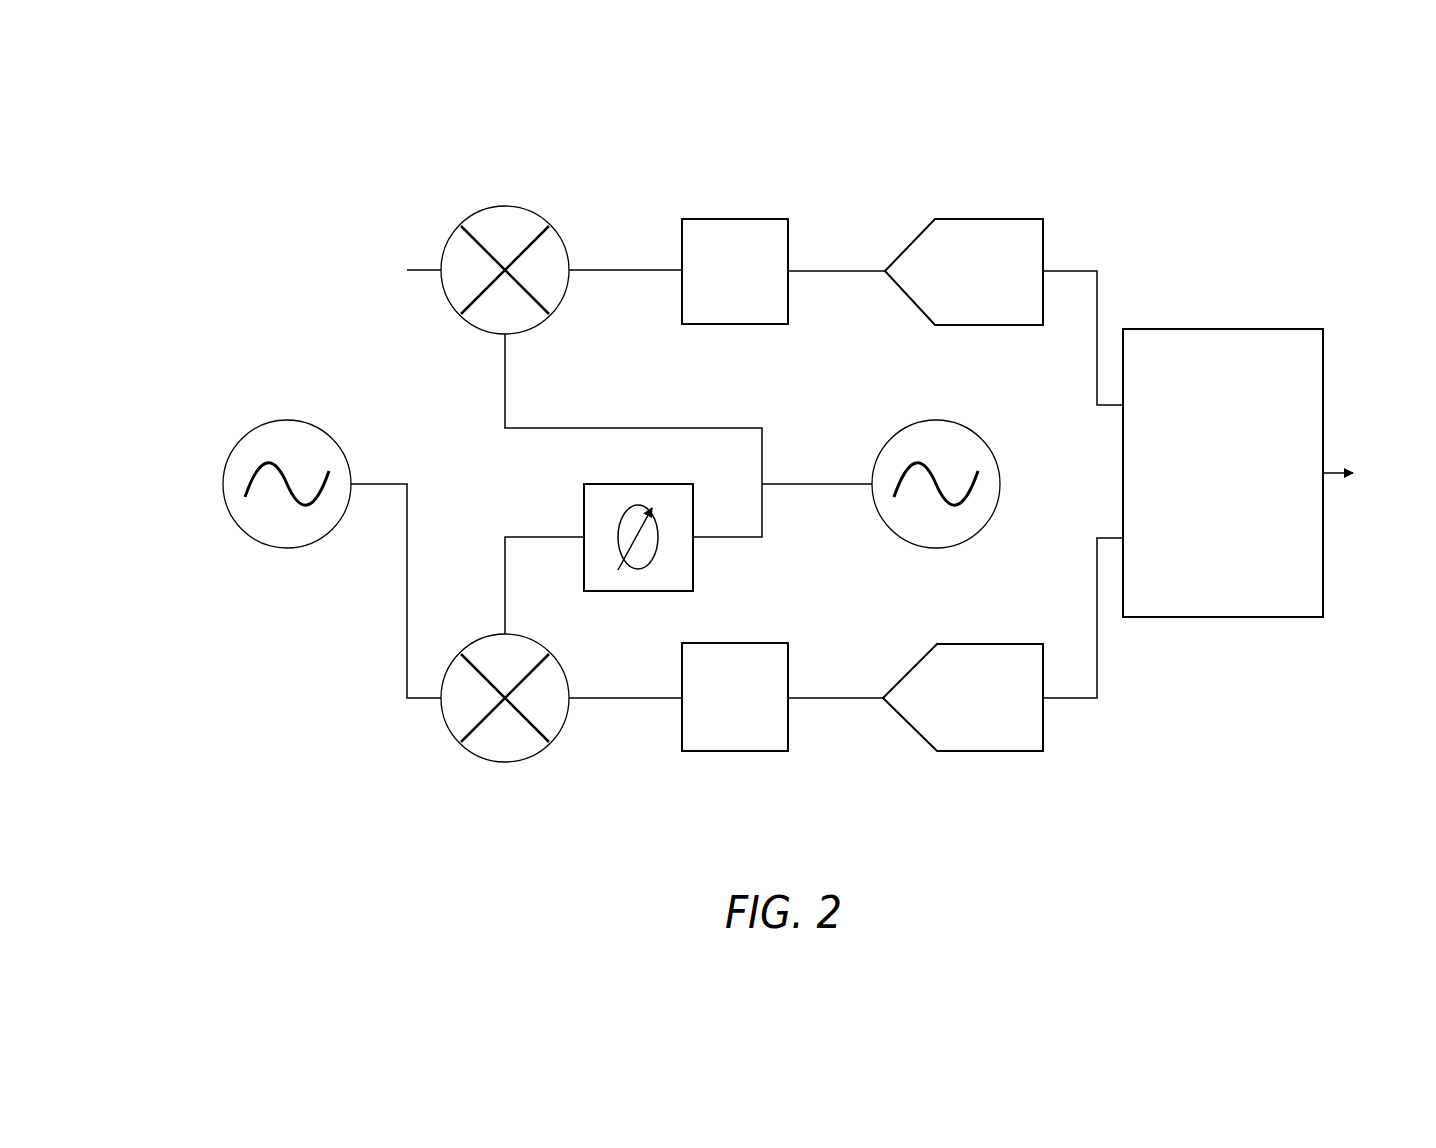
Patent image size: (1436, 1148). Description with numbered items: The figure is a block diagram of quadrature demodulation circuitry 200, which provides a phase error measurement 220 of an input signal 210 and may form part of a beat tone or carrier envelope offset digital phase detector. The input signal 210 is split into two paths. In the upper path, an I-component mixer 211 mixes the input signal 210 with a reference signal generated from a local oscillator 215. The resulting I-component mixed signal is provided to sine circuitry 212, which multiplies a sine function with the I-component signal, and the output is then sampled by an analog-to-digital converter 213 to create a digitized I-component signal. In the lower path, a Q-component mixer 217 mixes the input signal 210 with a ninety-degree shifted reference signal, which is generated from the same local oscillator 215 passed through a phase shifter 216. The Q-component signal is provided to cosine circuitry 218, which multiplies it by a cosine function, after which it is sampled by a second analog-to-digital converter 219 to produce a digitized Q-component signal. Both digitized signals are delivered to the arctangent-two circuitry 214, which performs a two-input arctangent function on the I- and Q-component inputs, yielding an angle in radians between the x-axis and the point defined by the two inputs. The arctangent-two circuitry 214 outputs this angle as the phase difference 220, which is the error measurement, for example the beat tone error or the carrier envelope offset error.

The quadrature demodulation circuitry 200 is at (1290, 142).
The input signal 210 is at (265, 423).
The I-component mixer 211 is at (475, 213).
The sine circuitry 212 is at (702, 219).
The analog-to-digital converter 213 is at (972, 220).
The arctangent 2 circuitry 214 is at (1282, 329).
The local oscillator 215 is at (975, 433).
The phase shifter 216 is at (585, 502).
The Q-component mixer 217 is at (470, 750).
The cosine circuitry 218 is at (728, 749).
The analog-to-digital converter 219 is at (943, 750).
The phase error measurement 220 is at (1345, 470).